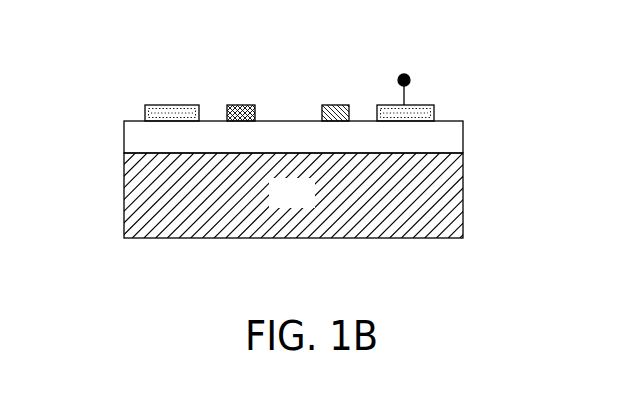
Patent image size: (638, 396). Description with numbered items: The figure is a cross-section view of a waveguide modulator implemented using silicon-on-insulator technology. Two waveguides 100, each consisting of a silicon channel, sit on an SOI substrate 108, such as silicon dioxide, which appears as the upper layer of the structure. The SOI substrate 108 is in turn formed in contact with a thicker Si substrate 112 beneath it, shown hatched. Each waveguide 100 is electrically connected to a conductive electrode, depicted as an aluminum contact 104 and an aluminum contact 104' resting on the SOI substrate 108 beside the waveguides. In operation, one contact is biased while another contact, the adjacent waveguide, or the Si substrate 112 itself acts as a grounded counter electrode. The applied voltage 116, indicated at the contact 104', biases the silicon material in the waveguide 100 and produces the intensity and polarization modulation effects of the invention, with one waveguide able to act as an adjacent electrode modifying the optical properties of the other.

The waveguide 100 is at (331, 101).
The aluminum contact 104 is at (172, 83).
The aluminum contact 104' is at (428, 83).
The SOI substrate 108 is at (272, 148).
The Si substrate 112 is at (309, 206).
The applied voltage 116 is at (403, 75).